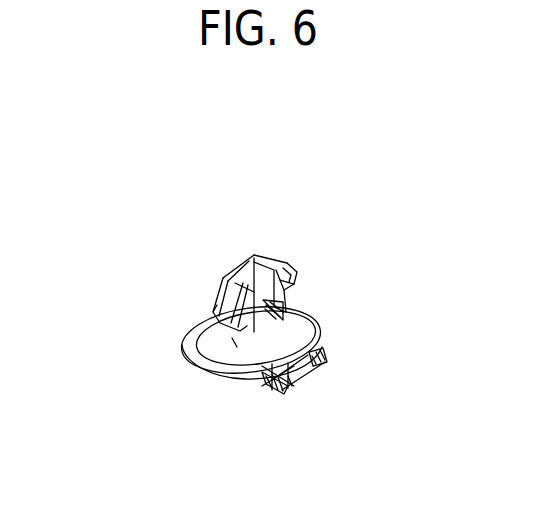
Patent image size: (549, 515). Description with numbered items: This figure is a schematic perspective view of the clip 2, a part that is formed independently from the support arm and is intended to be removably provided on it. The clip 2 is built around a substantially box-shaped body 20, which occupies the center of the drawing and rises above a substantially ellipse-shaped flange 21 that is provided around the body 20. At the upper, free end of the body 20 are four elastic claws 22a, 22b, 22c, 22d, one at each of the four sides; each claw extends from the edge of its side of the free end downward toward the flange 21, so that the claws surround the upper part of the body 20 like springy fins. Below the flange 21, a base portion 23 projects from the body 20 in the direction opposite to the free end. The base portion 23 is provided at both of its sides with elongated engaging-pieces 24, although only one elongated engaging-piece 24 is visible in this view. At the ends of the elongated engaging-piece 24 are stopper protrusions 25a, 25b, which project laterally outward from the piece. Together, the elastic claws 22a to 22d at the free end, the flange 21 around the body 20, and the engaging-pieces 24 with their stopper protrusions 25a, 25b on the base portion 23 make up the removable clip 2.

The clip 2 is at (253, 253).
The substantially box-shaped body 20 is at (235, 378).
The substantially ellipse-shaped flange 21 is at (181, 348).
The elastic claw 22a is at (217, 305).
The elastic claw 22b is at (298, 320).
The elastic claw 22c is at (296, 276).
The elastic claw 22d is at (213, 291).
The base portion 23 is at (300, 366).
The elongated engaging-piece 24 is at (270, 378).
The stopper protrusion 25a is at (292, 386).
The stopper protrusion 25b is at (320, 362).